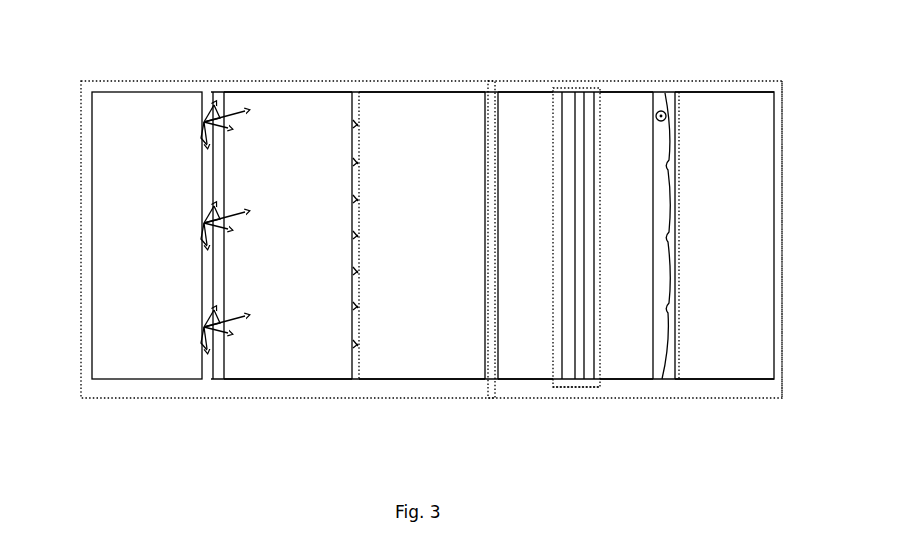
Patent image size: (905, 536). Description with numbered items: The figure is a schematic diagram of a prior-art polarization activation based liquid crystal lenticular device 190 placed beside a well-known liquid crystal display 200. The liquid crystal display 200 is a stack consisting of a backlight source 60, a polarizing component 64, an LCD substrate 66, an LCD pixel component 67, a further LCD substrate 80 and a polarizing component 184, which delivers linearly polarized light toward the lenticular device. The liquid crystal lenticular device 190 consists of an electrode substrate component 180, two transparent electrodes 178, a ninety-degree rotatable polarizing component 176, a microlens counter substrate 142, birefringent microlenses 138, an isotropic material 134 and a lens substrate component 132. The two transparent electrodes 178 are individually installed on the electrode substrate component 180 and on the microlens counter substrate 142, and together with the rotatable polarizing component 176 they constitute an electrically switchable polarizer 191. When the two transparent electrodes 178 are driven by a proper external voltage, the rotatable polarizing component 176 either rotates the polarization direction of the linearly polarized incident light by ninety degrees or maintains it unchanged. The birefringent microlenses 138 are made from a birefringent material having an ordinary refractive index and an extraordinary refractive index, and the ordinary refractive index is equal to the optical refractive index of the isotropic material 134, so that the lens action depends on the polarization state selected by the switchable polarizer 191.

The liquid crystal display 200 is at (81, 82).
The polarization activation based liquid crystal lenticular device 190 is at (783, 82).
The backlight source 60 is at (146, 381).
The polarizing component 64 is at (215, 382).
The LCD substrate 66 is at (290, 380).
The LCD pixel component 67 is at (355, 380).
The LCD substrate 80 is at (425, 380).
The polarizing component 184 is at (492, 91).
The electrode substrate component 180 is at (515, 380).
The transparent electrodes 178 is at (578, 90).
The 90-degree rotatable polarizing component 176 is at (577, 361).
The electrically switchable polarizer 191 is at (600, 385).
The microlens counter substrate 142 is at (630, 118).
The birefringent microlenses 138 is at (663, 95).
The lens substrate component 132 is at (730, 107).
The isotropic material 134 is at (672, 369).